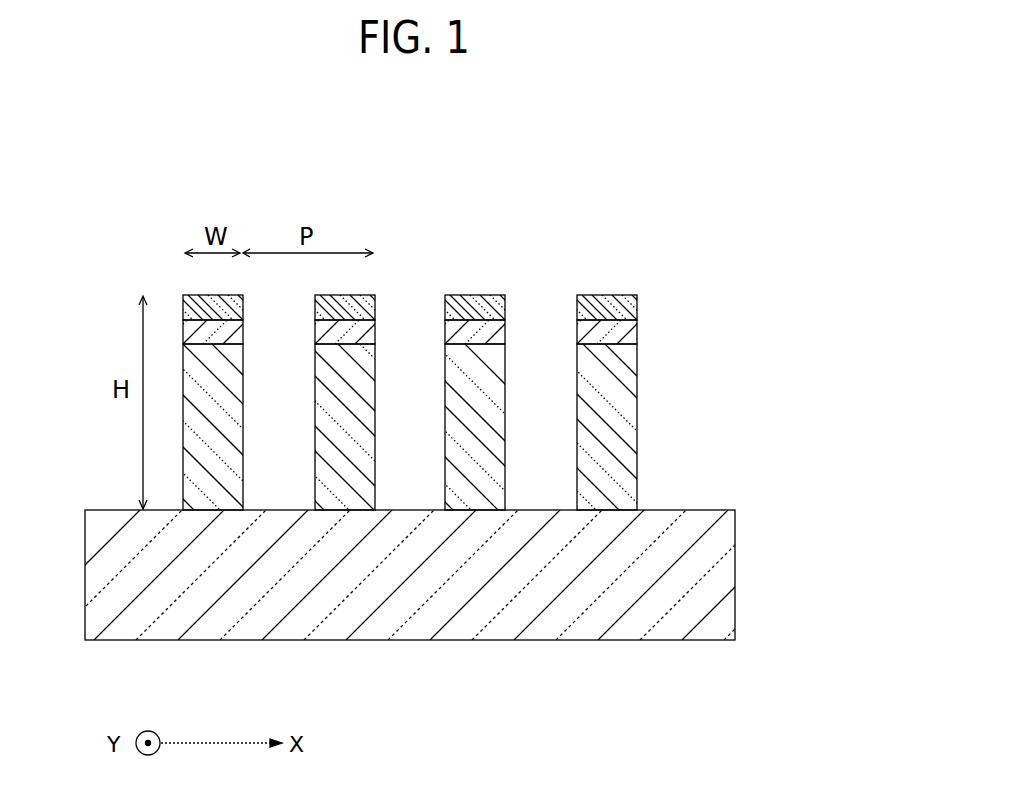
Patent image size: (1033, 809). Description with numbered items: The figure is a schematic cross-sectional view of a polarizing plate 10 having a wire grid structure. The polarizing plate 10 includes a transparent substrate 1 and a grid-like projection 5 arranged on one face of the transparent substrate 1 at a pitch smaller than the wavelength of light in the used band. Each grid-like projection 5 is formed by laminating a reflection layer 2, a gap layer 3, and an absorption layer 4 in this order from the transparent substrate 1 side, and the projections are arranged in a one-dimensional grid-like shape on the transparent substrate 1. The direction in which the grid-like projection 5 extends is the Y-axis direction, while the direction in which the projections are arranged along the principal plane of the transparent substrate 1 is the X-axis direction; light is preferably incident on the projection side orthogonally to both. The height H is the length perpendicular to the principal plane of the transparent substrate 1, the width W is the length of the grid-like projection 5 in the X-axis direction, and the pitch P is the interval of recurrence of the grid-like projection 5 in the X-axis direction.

The transparent substrate 1 is at (723, 570).
The reflection layer 2 is at (632, 405).
The gap layer 3 is at (630, 340).
The absorption layer 4 is at (443, 308).
The grid-like projection 5 is at (405, 402).
The polarizing plate 10 is at (730, 180).